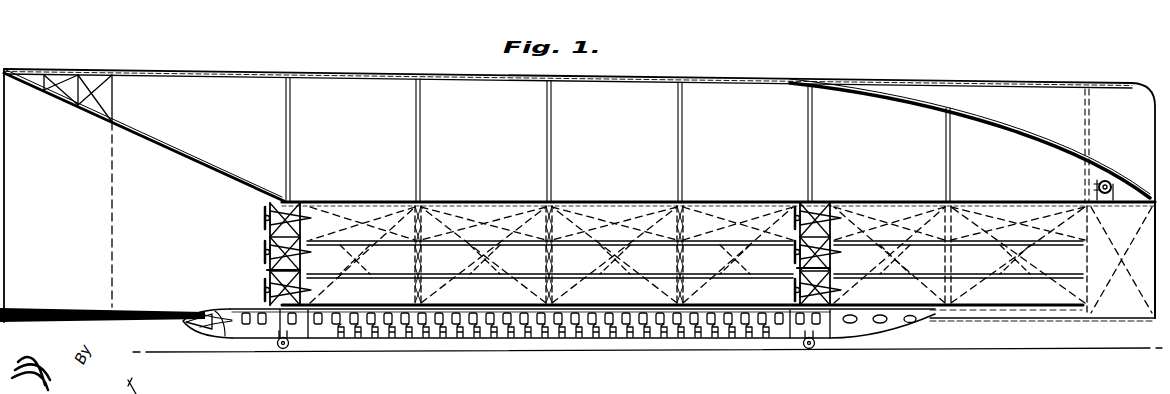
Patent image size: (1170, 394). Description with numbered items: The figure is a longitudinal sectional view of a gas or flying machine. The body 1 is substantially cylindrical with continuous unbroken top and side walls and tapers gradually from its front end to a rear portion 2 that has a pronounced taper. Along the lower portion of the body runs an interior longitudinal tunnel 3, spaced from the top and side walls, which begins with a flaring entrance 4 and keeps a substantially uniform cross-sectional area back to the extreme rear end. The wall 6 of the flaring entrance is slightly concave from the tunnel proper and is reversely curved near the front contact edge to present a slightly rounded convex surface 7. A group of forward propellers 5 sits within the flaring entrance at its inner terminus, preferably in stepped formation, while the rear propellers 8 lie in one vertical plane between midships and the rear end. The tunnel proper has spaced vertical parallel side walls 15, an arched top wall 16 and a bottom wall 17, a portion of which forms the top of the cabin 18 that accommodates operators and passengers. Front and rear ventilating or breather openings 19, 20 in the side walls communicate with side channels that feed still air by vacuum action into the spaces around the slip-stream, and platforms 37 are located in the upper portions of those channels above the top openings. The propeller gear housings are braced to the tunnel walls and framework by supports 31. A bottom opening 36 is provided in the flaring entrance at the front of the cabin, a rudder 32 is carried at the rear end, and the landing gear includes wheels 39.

The body of the machine 1 is at (368, 72).
The rear portion 2 is at (920, 90).
The interior longitudinal tunnel 3 is at (368, 202).
The flaring entrance 4 is at (137, 185).
The forward propellers 5 is at (264, 252).
The wall of the flaring entrance 6 is at (222, 168).
The convex surface 7 is at (12, 78).
The rear propellers 8 is at (782, 205).
The side walls of the tunnel 15 is at (470, 207).
The top wall of the tunnel 16 is at (619, 210).
The bottom wall of the tunnel 17 is at (445, 287).
The cabin 18 is at (395, 340).
The front ventilating openings 19 is at (360, 243).
The rear ventilating openings 20 is at (870, 247).
The supports 31 is at (266, 272).
The rudder 32 is at (1112, 105).
The bottom opening 36 is at (196, 323).
The platforms 37 is at (707, 240).
The wheels 39 is at (285, 350).